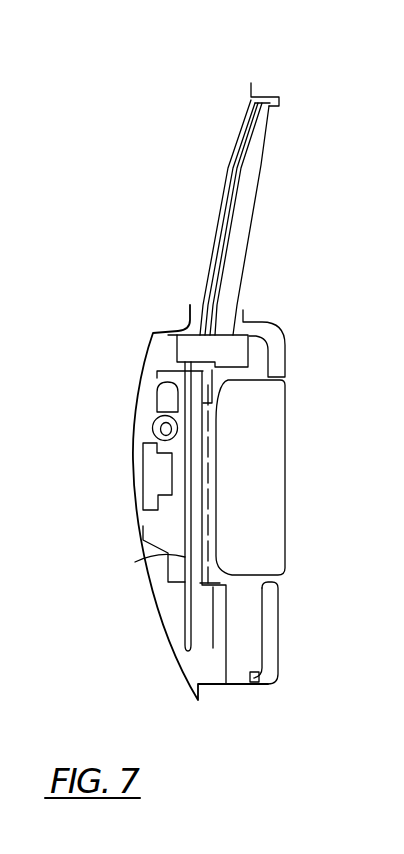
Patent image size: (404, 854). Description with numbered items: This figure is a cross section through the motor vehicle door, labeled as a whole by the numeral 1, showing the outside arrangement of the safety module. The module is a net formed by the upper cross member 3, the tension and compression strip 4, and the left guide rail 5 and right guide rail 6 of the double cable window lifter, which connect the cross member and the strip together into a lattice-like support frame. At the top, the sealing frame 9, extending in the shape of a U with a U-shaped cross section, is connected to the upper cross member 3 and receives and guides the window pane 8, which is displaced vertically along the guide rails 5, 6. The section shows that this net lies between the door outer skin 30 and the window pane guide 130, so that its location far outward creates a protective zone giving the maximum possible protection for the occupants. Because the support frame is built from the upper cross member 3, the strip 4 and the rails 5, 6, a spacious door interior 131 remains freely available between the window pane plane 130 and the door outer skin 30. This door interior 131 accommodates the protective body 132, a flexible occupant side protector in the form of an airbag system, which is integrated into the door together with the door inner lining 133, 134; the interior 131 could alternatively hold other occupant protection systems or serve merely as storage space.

The device 1 is at (122, 109).
The sealing frame 9 is at (228, 205).
The window pane 8 is at (227, 250).
The upper cross member 3 is at (177, 355).
The door inner lining 134 is at (276, 343).
The protective body 132 is at (280, 392).
The window pane guide 130 is at (210, 606).
The door outer skin 30 is at (148, 446).
The tension and compression strip 4 is at (157, 475).
The left guide rail 5 is at (108, 590).
The right guide rail 6 is at (137, 562).
The door inner lining 133 is at (272, 608).
The door interior 131 is at (243, 632).